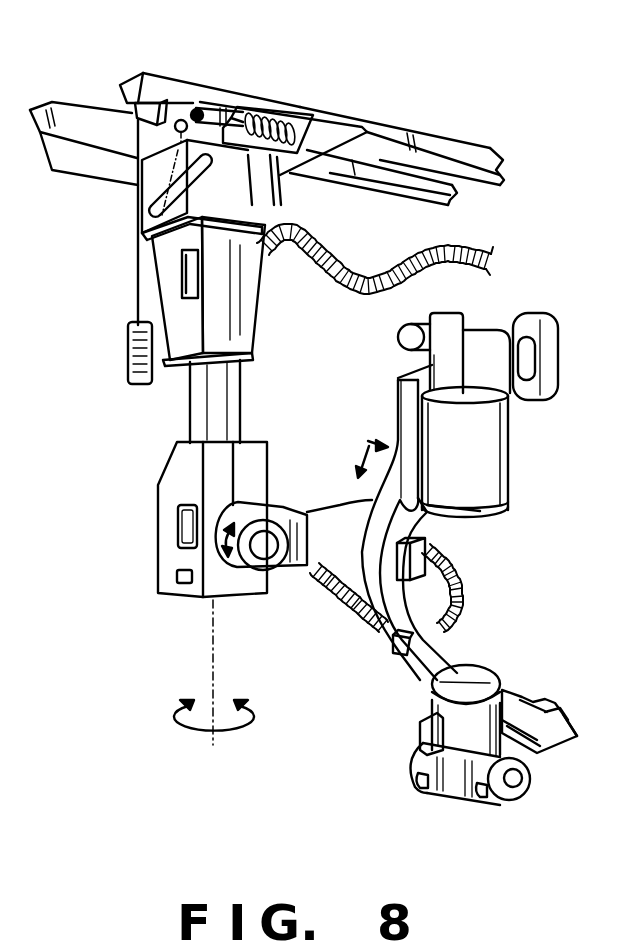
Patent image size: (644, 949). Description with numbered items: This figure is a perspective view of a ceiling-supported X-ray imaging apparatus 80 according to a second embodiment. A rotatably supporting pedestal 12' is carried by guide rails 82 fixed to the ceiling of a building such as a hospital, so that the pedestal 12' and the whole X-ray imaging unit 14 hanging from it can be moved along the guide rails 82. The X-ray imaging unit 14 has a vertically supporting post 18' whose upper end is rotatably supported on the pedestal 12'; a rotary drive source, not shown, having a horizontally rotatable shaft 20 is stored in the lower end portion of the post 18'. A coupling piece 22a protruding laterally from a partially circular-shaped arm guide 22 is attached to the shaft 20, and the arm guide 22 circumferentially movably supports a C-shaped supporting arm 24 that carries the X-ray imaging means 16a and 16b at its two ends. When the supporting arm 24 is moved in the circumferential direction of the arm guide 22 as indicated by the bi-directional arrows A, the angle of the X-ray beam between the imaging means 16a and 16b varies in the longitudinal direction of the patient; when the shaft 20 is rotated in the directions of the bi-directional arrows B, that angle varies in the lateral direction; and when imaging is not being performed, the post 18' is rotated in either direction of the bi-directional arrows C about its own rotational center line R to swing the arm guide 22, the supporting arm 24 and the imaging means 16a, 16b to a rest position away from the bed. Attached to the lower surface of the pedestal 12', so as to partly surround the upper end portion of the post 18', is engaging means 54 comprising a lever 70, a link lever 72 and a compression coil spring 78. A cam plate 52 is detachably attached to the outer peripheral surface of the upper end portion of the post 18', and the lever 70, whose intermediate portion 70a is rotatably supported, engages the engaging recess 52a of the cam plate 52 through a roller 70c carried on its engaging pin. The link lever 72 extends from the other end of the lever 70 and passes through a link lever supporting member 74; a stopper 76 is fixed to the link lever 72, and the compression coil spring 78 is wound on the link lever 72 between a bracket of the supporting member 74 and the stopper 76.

The rotatably supporting pedestal 12' is at (273, 122).
The guide rails 82 is at (487, 197).
The cam plate 52 is at (130, 162).
The engaging recess 52a is at (179, 120).
The vertically supporting post 18' is at (108, 252).
The lever 70 is at (203, 162).
The link lever supporting member 74 is at (288, 186).
The roller 70c is at (150, 216).
The link lever 72 is at (217, 103).
The engaging means 54 is at (233, 100).
The compression coil spring 78 is at (300, 103).
The stopper 76 is at (262, 112).
The intermediate portion 70a is at (215, 225).
The X-ray imaging apparatus 80 is at (130, 597).
The rotatably driving shaft 20 is at (262, 560).
The X-ray imaging unit 14 is at (311, 485).
The bi-directional arrows B is at (216, 508).
The bi-directional arrows A is at (371, 440).
The coupling piece 22a is at (298, 563).
The arm guide 22 is at (393, 630).
The supporting arm 24 is at (405, 668).
The X-ray imaging means 16b is at (505, 495).
The X-ray imaging means 16a is at (493, 680).
The rotational center line R is at (185, 722).
The bi-directional arrows C is at (237, 727).